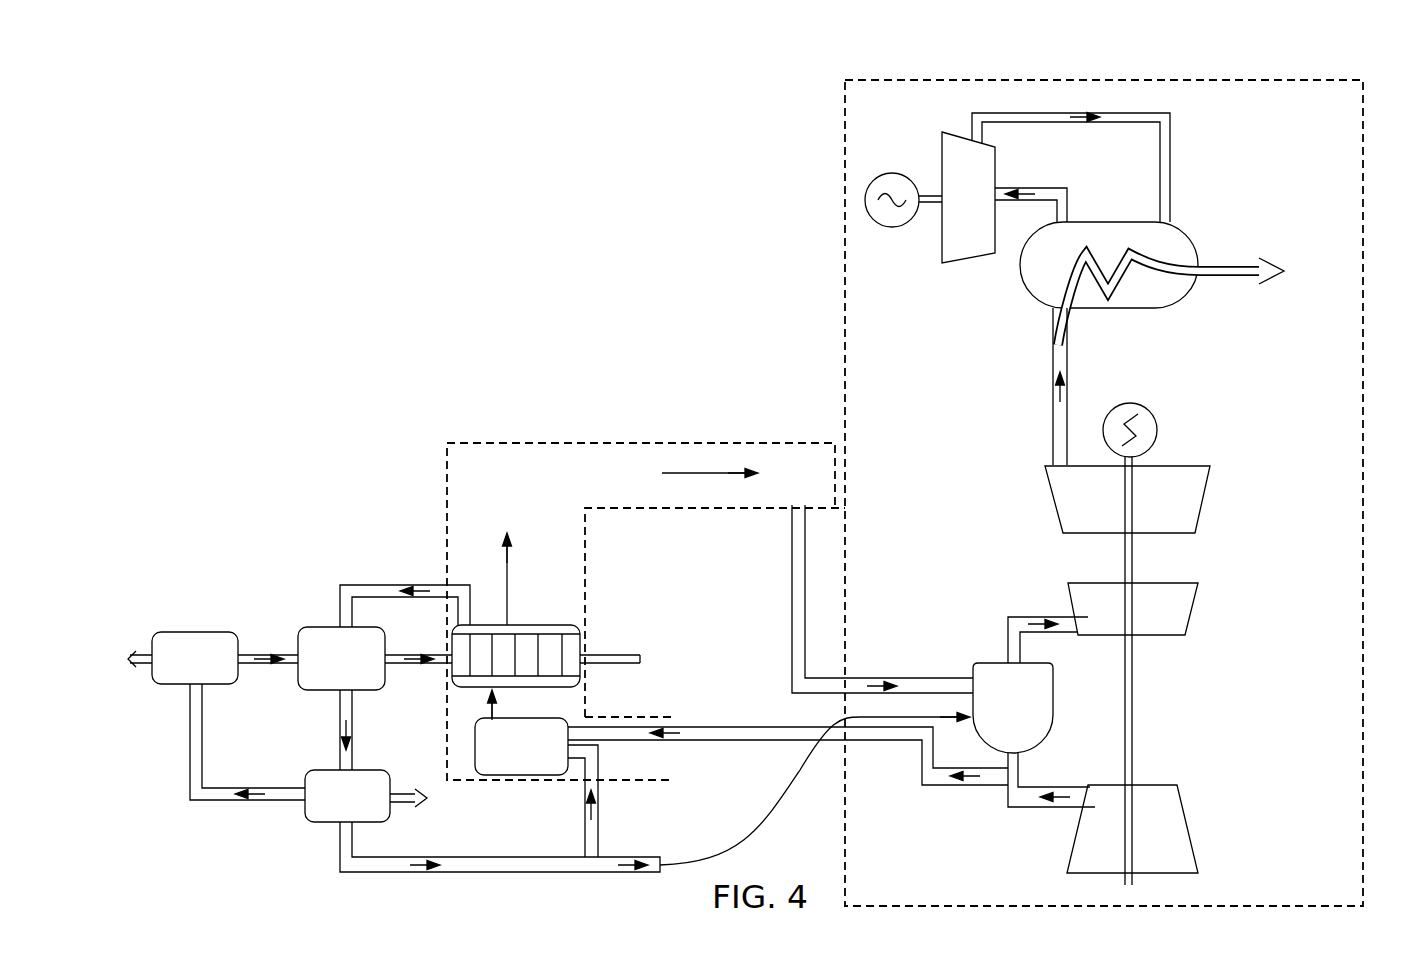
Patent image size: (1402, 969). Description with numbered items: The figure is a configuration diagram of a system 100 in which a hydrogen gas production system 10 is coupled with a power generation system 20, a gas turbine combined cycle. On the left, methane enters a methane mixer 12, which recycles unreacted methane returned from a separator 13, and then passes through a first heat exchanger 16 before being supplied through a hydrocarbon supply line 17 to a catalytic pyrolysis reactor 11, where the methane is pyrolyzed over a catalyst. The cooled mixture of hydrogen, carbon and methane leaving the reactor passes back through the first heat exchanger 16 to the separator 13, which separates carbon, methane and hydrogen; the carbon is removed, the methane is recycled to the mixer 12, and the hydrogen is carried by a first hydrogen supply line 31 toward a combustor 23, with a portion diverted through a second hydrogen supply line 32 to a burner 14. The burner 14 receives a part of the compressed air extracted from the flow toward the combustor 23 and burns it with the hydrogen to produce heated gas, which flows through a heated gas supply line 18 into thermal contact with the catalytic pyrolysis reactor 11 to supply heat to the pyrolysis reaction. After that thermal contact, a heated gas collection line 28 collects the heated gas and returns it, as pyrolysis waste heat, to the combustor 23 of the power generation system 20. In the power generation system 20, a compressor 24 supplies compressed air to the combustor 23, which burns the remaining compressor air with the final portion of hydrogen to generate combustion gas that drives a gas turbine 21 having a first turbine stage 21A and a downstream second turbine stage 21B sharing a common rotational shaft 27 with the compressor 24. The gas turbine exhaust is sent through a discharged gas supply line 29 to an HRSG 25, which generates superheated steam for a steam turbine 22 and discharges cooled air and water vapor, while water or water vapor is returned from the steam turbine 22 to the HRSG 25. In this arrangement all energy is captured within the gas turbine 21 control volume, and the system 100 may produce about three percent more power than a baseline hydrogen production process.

The system 100 is at (805, 65).
The hydrogen gas production system 10 is at (410, 435).
The methane mixer 12 is at (192, 630).
The first heat exchanger 16 is at (358, 690).
The hydrocarbon supply line 17 is at (397, 662).
The catalytic pyrolysis reactor 11 is at (565, 625).
The heated gas collection line 28 is at (522, 490).
The heated gas supply line 18 is at (470, 720).
The burner 14 is at (473, 745).
The separator 13 is at (318, 823).
The first hydrogen supply line 31 is at (647, 857).
The second hydrogen supply line 32 is at (600, 845).
The power generation system 20 is at (1187, 78).
The steam turbine 22 is at (970, 265).
The HRSG 25 is at (1180, 234).
The discharged gas supply line 29 is at (1052, 373).
The common rotational shaft 27 is at (1127, 705).
The second turbine stage 21B is at (1203, 510).
The gas turbine 21 is at (1189, 551).
The first turbine stage 21A is at (1190, 614).
The combustor 23 is at (1052, 730).
The compressor 24 is at (1183, 810).